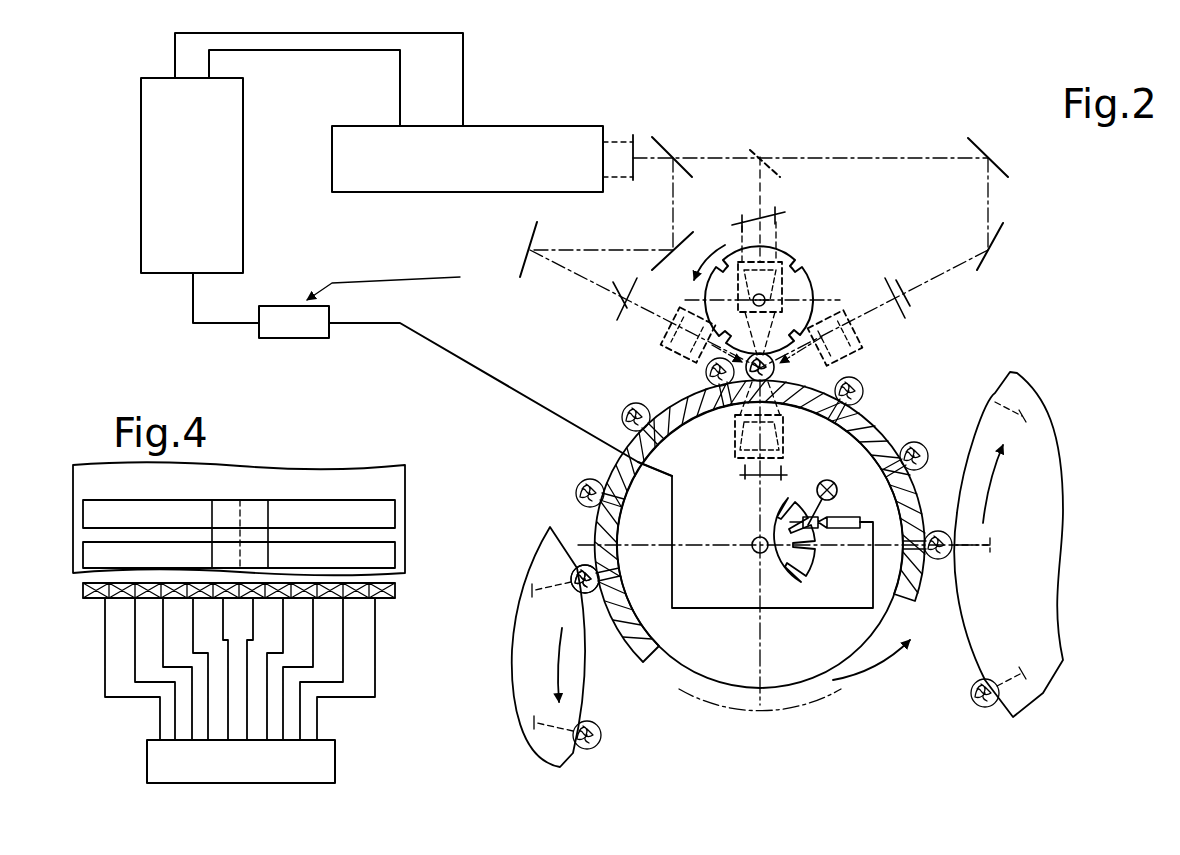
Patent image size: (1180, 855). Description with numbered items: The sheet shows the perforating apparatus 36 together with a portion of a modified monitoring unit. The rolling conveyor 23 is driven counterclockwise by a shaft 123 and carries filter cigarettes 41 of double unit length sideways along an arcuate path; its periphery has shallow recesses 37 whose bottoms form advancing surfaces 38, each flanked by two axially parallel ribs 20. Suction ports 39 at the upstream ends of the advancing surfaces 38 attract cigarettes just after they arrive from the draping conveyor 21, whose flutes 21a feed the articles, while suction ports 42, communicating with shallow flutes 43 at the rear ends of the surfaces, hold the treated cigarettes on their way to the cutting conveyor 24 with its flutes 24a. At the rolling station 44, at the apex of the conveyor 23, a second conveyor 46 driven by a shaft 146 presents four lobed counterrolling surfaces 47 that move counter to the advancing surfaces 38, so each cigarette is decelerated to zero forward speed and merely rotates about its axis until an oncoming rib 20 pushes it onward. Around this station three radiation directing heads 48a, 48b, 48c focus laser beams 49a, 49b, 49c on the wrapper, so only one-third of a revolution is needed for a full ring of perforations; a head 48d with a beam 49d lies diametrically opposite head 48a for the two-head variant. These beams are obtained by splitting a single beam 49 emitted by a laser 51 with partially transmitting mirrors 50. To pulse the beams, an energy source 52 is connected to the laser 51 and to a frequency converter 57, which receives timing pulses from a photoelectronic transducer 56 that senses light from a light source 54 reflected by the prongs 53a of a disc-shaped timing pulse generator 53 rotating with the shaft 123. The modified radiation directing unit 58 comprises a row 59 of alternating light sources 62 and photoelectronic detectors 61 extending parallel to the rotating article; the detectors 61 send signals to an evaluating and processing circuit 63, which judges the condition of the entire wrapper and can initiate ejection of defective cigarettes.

In FIG. 2, the ribs 20 is at (663, 407).
In FIG. 2, the draping conveyor 21 is at (1048, 449).
In FIG. 2, the flutes 21a is at (970, 695).
In FIG. 2, the rolling conveyor 23 is at (790, 704).
In FIG. 4, the rolling conveyor 23 is at (84, 539).
In FIG. 2, the cutting conveyor 24 is at (575, 679).
In FIG. 2, the flutes 24a is at (572, 572).
In FIG. 2, the apparatus 36 is at (868, 222).
In FIG. 2, the recesses 37 is at (917, 384).
In FIG. 2, the advancing surfaces 38 is at (852, 418).
In FIG. 2, the suction ports 39 is at (620, 466).
In FIG. 2, the filter cigarettes 41 is at (929, 461).
In FIG. 4, the filter cigarettes 41 is at (388, 557).
In FIG. 2, the suction ports 42 is at (855, 470).
In FIG. 2, the flutes 43 is at (903, 427).
In FIG. 2, the rolling station 44 is at (780, 372).
In FIG. 2, the second conveyor 46 is at (796, 289).
In FIG. 2, the counterrolling surfaces 47 is at (783, 258).
In FIG. 2, the radiation directing head 48a is at (735, 429).
In FIG. 2, the radiation directing head 48b is at (662, 343).
In FIG. 2, the radiation directing head 48c is at (845, 300).
In FIG. 2, the radiation directing head 48d is at (800, 258).
In FIG. 2, the laser beam 49 is at (620, 147).
In FIG. 2, the laser beam 49a is at (742, 474).
In FIG. 2, the laser beam 49b is at (618, 300).
In FIG. 2, the laser beam 49c is at (910, 298).
In FIG. 2, the laser beam 49d is at (743, 243).
In FIG. 2, the partially transmitting mirrors 50 is at (660, 138).
In FIG. 2, the laser 51 is at (533, 140).
In FIG. 2, the energy source 52 is at (227, 103).
In FIG. 2, the timing pulse generator 53 is at (745, 586).
In FIG. 2, the prongs 53a is at (783, 527).
In FIG. 2, the light source 54 is at (839, 490).
In FIG. 2, the photoelectronic transducer 56 is at (848, 529).
In FIG. 2, the frequency converter 57 is at (297, 320).
In FIG. 4, the radiation directing unit 58 is at (414, 574).
In FIG. 4, the row 59 is at (396, 590).
In FIG. 4, the photoelectronic detectors 61 is at (88, 580).
In FIG. 4, the light sources 62 is at (360, 582).
In FIG. 4, the evaluating and processing circuit 63 is at (160, 768).
In FIG. 2, the shaft 123 is at (764, 554).
In FIG. 2, the shaft 146 is at (762, 307).